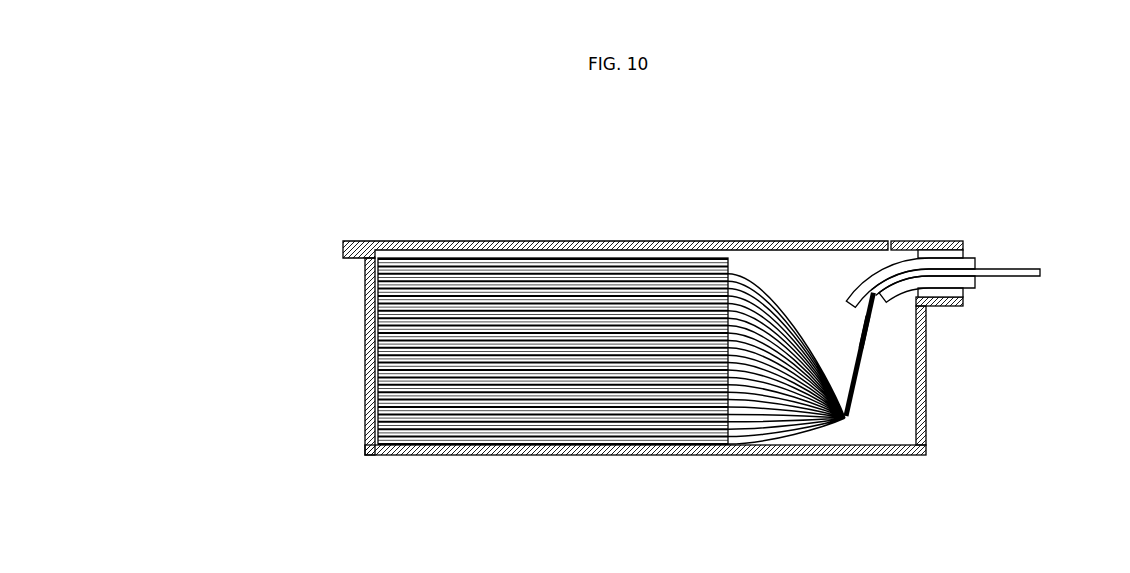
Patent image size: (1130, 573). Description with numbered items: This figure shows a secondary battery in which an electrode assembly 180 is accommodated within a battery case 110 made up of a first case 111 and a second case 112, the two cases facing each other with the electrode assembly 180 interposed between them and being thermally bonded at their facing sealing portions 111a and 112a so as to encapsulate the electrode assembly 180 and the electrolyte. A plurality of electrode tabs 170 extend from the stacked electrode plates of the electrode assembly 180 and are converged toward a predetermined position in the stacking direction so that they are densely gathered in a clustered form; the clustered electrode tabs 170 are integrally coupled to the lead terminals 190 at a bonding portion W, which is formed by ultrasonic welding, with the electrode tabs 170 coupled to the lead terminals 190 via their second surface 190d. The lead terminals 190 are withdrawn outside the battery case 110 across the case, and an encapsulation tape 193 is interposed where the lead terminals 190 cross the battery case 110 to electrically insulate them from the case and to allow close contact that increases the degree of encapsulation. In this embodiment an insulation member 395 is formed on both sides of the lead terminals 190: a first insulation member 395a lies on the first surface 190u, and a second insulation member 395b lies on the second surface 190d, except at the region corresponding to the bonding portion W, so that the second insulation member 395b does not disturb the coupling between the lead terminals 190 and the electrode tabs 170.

The battery case 110 is at (343, 290).
The first case 111 is at (621, 233).
The sealing portion of first case 111a is at (937, 236).
The second case 112 is at (838, 448).
The sealing portion of second case 112a is at (955, 297).
The electrode tabs 170 is at (757, 283).
The electrode assembly 180 is at (555, 403).
The lead terminals 190 is at (974, 305).
The first surface of lead terminals 190u is at (886, 262).
The second surface of lead terminals 190d is at (883, 283).
The encapsulation tape 193 is at (921, 242).
The insulation member 395 is at (966, 261).
The first insulation member 395a is at (957, 256).
The second insulation member 395b is at (963, 274).
The bonding portion W is at (862, 308).